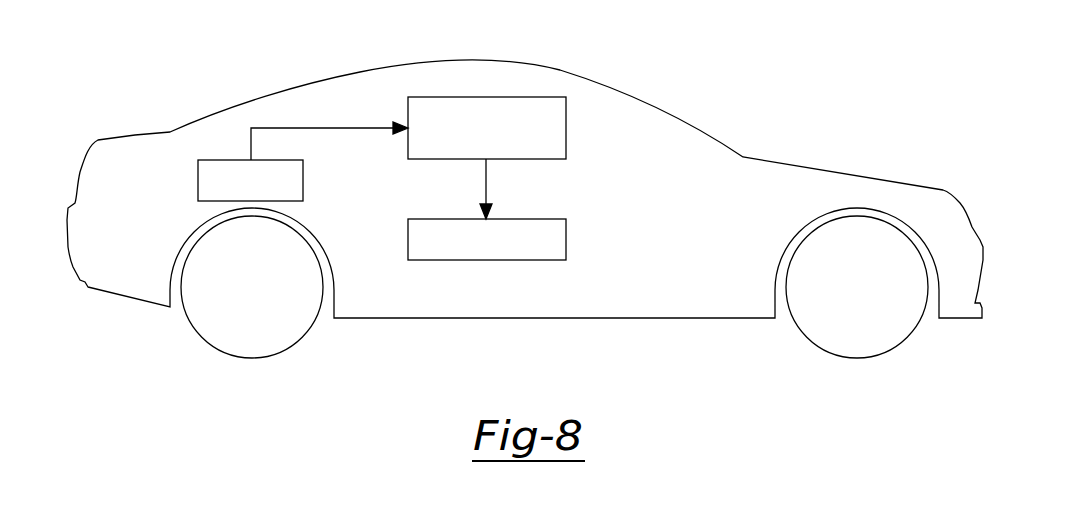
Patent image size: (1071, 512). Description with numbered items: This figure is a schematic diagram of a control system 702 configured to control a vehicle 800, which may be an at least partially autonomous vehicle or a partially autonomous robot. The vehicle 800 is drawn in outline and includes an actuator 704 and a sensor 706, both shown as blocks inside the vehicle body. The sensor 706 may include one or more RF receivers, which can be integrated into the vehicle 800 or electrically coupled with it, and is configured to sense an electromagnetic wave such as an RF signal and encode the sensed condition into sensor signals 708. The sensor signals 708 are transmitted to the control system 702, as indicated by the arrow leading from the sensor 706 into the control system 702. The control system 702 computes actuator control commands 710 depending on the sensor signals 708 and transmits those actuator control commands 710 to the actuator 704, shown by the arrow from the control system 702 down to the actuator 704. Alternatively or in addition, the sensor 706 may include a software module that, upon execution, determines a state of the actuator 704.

The vehicle 800 is at (716, 82).
The control system 702 is at (566, 128).
The actuator 704 is at (566, 240).
The sensor 706 is at (198, 177).
The sensor signals 708 is at (346, 129).
The actuator control commands 710 is at (489, 181).